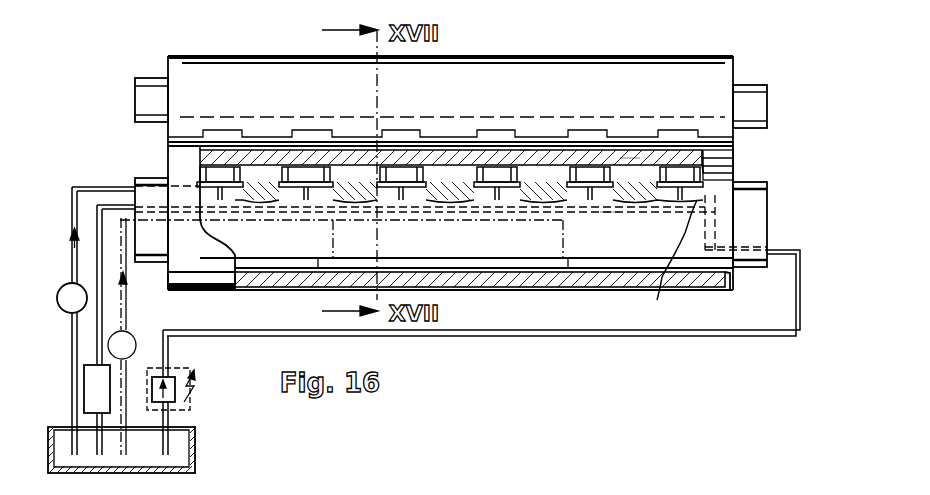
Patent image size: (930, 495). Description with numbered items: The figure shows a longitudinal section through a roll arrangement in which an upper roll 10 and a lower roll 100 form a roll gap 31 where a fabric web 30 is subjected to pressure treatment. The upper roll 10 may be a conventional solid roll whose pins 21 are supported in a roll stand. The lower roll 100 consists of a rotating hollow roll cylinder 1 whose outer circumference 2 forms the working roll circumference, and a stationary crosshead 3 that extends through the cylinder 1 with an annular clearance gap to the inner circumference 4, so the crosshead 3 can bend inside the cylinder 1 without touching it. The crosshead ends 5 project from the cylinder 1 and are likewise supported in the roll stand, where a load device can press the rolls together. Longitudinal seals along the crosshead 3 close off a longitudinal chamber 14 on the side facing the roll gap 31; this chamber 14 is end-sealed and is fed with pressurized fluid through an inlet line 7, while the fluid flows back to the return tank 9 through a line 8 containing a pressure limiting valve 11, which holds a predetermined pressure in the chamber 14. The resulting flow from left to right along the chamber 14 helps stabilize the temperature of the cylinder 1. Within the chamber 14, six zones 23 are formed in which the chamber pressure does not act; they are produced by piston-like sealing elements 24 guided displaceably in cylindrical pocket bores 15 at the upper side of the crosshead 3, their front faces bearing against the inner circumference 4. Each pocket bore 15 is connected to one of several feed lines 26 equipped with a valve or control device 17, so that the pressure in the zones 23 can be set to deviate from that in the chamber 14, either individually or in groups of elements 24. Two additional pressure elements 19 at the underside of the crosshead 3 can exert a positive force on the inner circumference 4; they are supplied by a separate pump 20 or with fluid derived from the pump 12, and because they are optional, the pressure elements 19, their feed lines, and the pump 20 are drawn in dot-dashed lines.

The hollow roll cylinder 1 is at (629, 160).
The outer circumference 2 is at (455, 176).
The crosshead 3 is at (648, 252).
The inner circumference 4 is at (452, 170).
The crosshead ends 5 is at (148, 172).
The inlet line 7 is at (268, 185).
The return line 8 is at (243, 337).
The return tank 9 is at (198, 441).
The upper roll 10 is at (697, 57).
The pressure limiting valve 11 is at (178, 377).
The pump 12 is at (66, 314).
The longitudinal chamber 14 is at (527, 173).
The cylindrical pocket bores 15 is at (246, 180).
The valve or control device 17 is at (109, 330).
The additional pressure elements 19 is at (318, 288).
The separate pump 20 is at (128, 333).
The pins 21 is at (150, 78).
The zones 23 is at (222, 130).
The piston-like sealing elements 24 is at (217, 177).
The feed lines 26 is at (612, 214).
The fabric web 30 is at (552, 148).
The roll gap 31 is at (742, 148).
The lower roll 100 is at (750, 168).